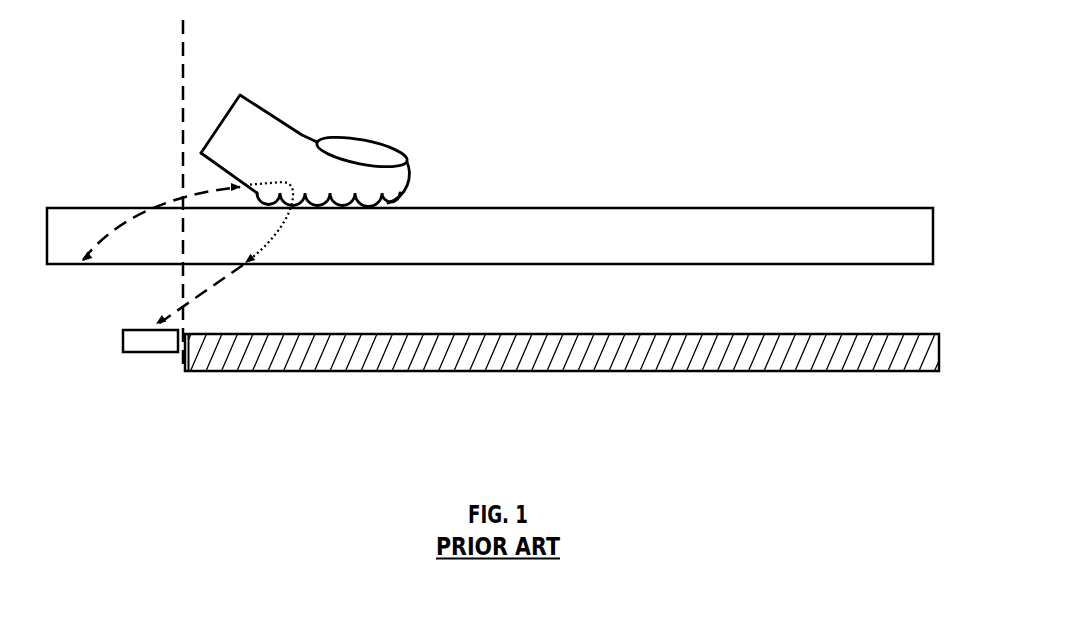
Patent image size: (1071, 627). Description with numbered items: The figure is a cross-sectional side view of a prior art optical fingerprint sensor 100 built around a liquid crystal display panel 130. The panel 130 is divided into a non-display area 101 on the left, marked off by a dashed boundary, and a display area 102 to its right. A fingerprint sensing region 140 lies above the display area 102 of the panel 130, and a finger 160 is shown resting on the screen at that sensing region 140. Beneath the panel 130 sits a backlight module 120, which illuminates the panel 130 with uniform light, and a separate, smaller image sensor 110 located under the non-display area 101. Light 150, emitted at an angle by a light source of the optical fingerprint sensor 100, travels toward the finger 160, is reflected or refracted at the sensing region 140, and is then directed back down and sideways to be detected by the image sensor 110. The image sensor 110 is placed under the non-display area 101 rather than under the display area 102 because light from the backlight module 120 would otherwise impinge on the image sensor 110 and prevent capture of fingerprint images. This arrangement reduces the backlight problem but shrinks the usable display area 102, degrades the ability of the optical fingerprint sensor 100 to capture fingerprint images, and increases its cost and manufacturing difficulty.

The optical fingerprint sensor 100 is at (499, 304).
The non-display area 101 is at (120, 67).
The display area 102 is at (283, 67).
The image sensor 110 is at (133, 352).
The backlight module 120 is at (297, 353).
The liquid crystal display (LCD) panel 130 is at (723, 238).
The fingerprint sensing region 140 is at (343, 195).
The light 150 is at (83, 262).
The finger 160 is at (263, 165).